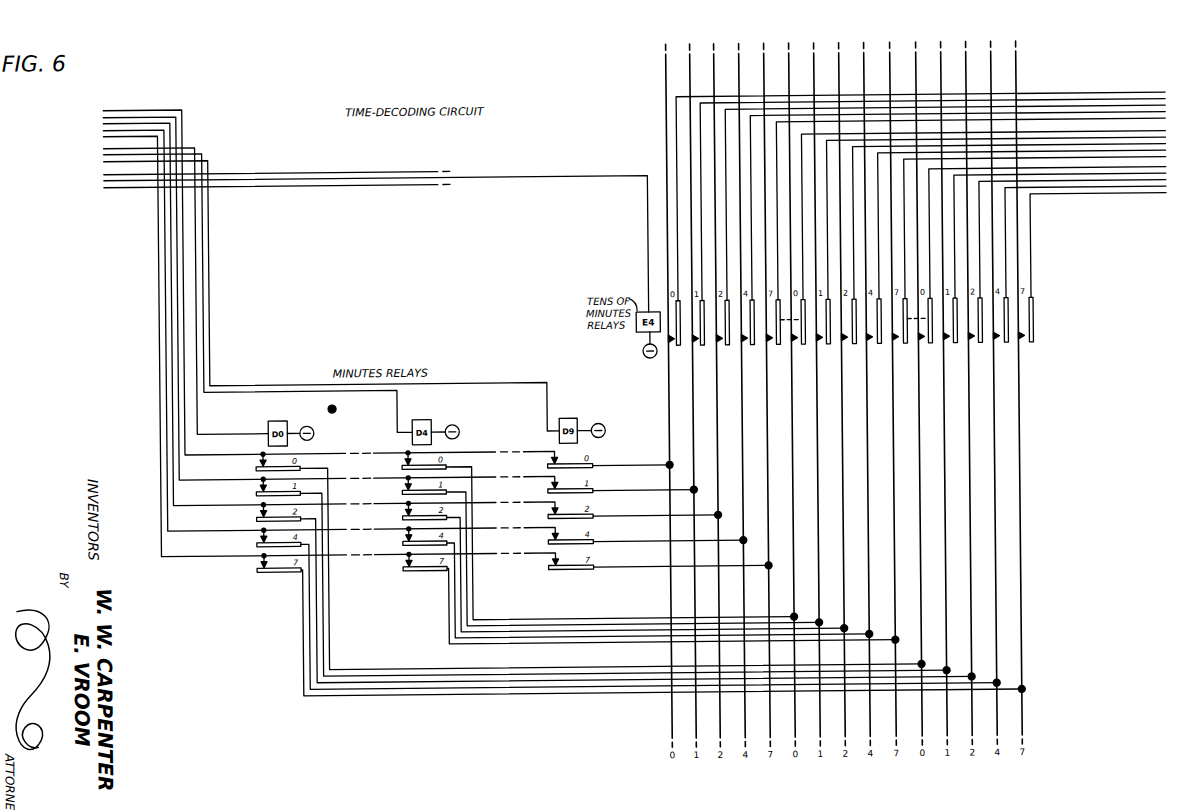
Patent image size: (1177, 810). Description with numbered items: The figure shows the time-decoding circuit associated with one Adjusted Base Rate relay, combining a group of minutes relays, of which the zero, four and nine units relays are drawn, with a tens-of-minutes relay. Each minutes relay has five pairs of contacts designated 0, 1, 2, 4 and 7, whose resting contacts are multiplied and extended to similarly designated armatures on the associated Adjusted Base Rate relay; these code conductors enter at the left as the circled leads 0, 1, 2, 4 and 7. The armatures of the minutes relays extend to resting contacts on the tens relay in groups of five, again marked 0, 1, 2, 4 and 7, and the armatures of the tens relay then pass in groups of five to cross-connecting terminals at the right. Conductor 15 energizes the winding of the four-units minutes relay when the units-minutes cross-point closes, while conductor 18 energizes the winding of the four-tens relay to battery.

The code contact 0 is at (184, 328).
The code contact 1 is at (178, 354).
The code contact 2 is at (172, 382).
The code contact 4 is at (166, 410).
The code contact 7 is at (160, 444).
The conductor 15 is at (204, 284).
The conductor 18 is at (305, 183).